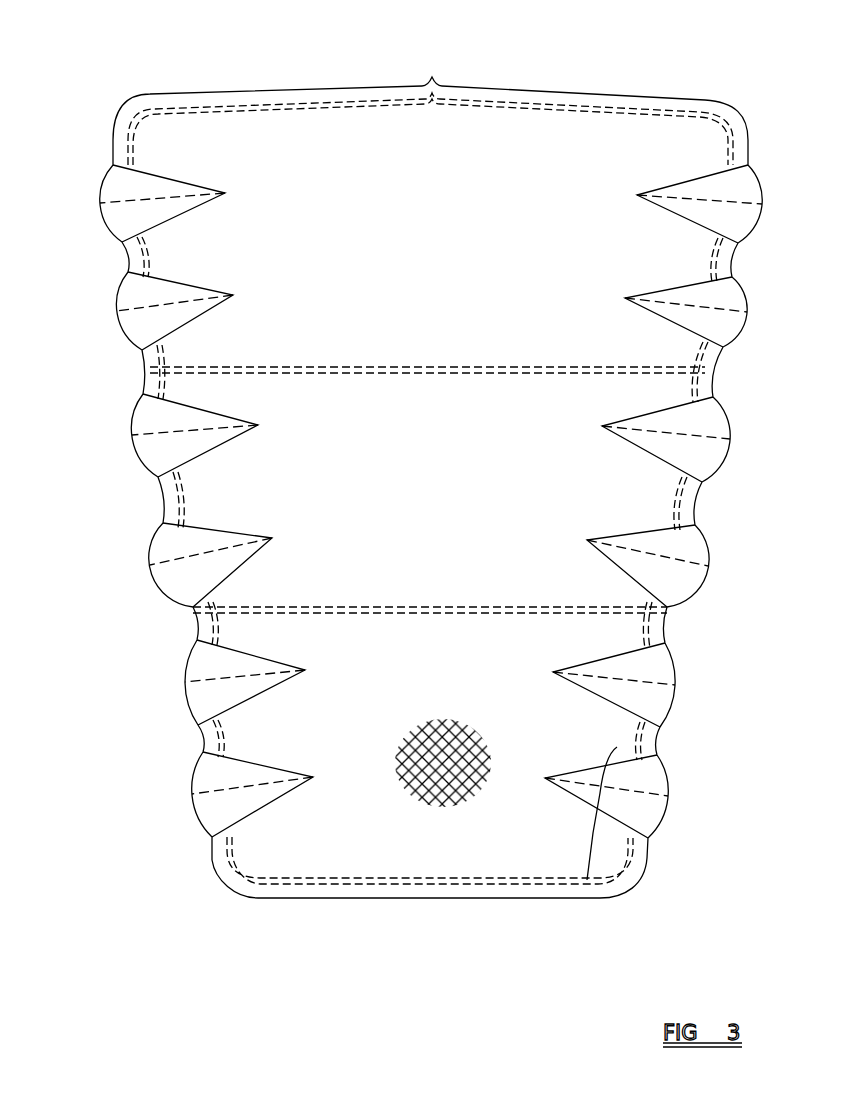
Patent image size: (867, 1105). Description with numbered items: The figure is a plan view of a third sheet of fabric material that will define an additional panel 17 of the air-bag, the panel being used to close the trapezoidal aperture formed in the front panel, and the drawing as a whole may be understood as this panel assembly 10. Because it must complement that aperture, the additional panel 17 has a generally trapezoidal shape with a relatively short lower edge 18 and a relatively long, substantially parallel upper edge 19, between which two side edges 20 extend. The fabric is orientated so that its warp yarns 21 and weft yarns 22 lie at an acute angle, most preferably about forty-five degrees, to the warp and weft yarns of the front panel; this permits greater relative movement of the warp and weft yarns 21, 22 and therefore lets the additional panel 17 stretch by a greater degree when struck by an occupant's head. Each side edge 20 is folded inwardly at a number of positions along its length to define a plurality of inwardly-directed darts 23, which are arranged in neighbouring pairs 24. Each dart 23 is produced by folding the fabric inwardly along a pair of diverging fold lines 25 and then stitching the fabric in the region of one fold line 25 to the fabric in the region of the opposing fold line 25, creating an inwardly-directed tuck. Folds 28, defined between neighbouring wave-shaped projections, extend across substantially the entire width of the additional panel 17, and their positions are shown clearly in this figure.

The pocket device 10 is at (243, 901).
The additional panel 17 is at (642, 114).
The lower edge 18 is at (490, 892).
The upper edge 19 is at (502, 108).
The side edge 20 is at (157, 500).
The warp yarns 21 is at (395, 762).
The weft yarns 22 is at (418, 798).
The dart 23 is at (738, 183).
The neighbouring pair 24 is at (785, 160).
The fold line 25 is at (617, 747).
The fold 28 is at (228, 367).